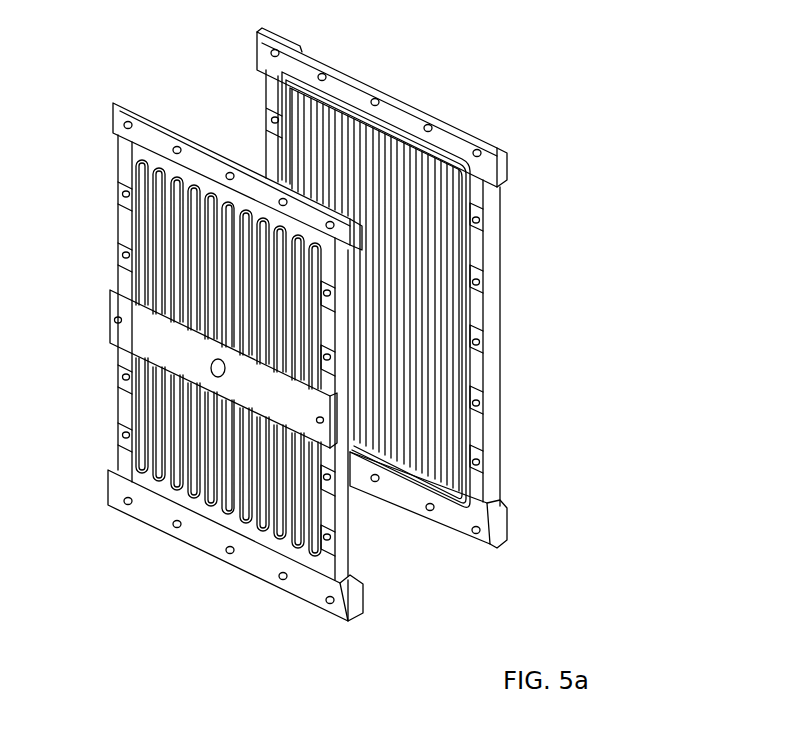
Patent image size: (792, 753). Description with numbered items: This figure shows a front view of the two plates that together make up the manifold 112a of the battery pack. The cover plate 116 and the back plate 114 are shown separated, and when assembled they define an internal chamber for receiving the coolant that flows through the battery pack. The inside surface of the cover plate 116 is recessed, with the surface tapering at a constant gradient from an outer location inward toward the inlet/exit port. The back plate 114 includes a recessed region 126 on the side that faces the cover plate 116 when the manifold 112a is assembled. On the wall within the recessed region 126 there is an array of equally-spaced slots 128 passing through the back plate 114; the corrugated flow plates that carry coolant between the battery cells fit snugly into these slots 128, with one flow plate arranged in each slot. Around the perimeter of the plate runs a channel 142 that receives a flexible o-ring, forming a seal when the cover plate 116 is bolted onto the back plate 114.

The manifold 112a is at (626, 281).
The back plate 114 is at (507, 528).
The cover plate 116 is at (312, 592).
The recessed region 126 is at (452, 485).
The slots 128 is at (437, 153).
The channel 142 is at (287, 75).